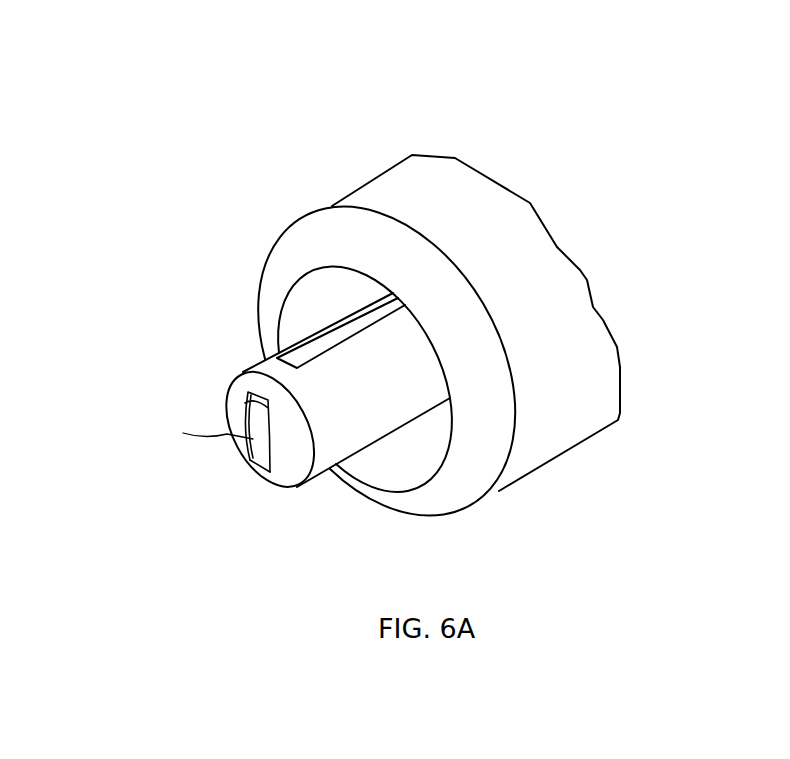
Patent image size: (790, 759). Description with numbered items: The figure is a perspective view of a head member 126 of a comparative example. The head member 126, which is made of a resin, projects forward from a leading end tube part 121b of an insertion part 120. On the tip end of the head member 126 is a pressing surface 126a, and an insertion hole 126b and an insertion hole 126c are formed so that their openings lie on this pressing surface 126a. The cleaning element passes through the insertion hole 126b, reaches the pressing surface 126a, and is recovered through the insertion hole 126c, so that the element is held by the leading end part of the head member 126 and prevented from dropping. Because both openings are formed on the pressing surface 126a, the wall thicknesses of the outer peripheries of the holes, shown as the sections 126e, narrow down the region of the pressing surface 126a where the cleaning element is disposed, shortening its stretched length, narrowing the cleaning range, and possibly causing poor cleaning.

The insertion part 120 is at (360, 308).
The leading end tube part 121b is at (560, 437).
The head member 126 is at (252, 433).
The pressing surface 126a is at (287, 473).
The insertion hole 126b is at (250, 462).
The insertion hole 126c is at (255, 388).
The wall thickness section of insertion hole outer periphery 126e is at (243, 372).